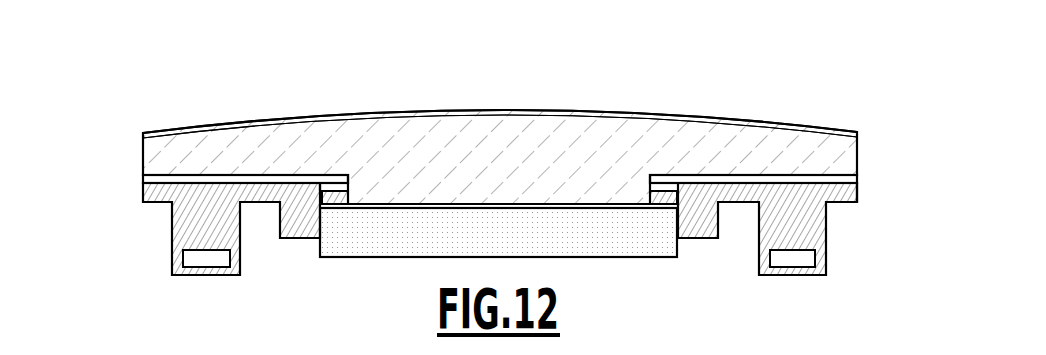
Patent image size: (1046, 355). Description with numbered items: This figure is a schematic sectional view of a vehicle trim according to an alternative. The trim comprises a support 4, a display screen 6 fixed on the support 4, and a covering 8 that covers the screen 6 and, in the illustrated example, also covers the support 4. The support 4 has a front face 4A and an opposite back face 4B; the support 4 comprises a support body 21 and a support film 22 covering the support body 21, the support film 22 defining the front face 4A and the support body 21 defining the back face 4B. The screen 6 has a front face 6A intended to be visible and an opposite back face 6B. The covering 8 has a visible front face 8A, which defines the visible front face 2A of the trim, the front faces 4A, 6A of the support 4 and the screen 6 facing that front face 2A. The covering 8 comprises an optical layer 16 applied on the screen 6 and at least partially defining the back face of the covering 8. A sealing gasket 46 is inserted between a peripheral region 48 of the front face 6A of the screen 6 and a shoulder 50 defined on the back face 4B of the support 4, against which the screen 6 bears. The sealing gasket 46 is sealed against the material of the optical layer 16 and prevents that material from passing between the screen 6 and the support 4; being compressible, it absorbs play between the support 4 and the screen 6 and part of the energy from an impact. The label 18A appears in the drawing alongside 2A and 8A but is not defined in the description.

The covering 8 is at (130, 94).
The optical layer 16 is at (160, 157).
The front face of the trim 2A is at (757, 118).
The front face of the covering 8A is at (500, 126).
The outer surface of coating 18A is at (500, 126).
The front face of the screen 6A is at (533, 204).
The support 4 is at (118, 235).
The front face of the support 4A is at (220, 172).
The back face of the support 4B is at (848, 205).
The support body 21 is at (147, 192).
The support film 22 is at (147, 179).
The sealing gasket 46 is at (333, 197).
The shoulder 50 is at (345, 198).
The peripheral region 48 is at (665, 205).
The display screen 6 is at (385, 240).
The back face of the screen 6B is at (578, 258).